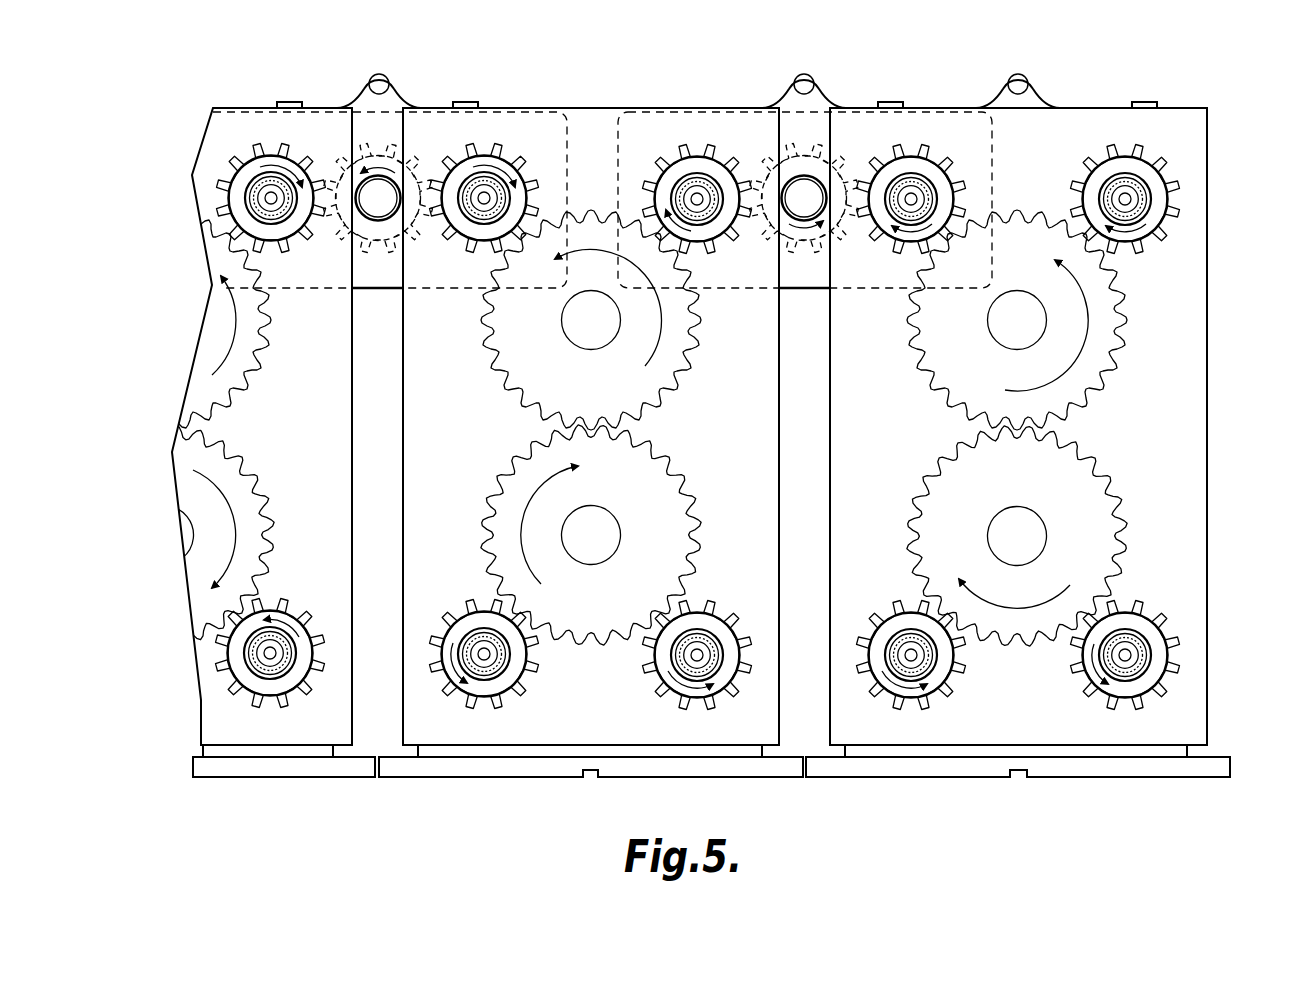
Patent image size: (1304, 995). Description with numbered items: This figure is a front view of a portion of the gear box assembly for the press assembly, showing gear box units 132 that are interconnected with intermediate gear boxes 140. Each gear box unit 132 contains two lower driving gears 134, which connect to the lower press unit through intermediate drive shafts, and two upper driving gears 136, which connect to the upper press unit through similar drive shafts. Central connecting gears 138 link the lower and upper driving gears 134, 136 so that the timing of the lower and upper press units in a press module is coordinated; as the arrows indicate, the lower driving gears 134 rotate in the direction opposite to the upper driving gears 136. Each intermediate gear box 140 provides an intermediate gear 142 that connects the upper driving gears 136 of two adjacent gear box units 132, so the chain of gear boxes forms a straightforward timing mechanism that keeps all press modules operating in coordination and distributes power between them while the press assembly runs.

The gear box unit 132 is at (251, 105).
The lower driving gear 134 is at (458, 700).
The upper driving gear 136 is at (486, 150).
The central connecting gear 138 is at (590, 212).
The intermediate gear box 140 is at (359, 77).
The intermediate gear 142 is at (803, 150).